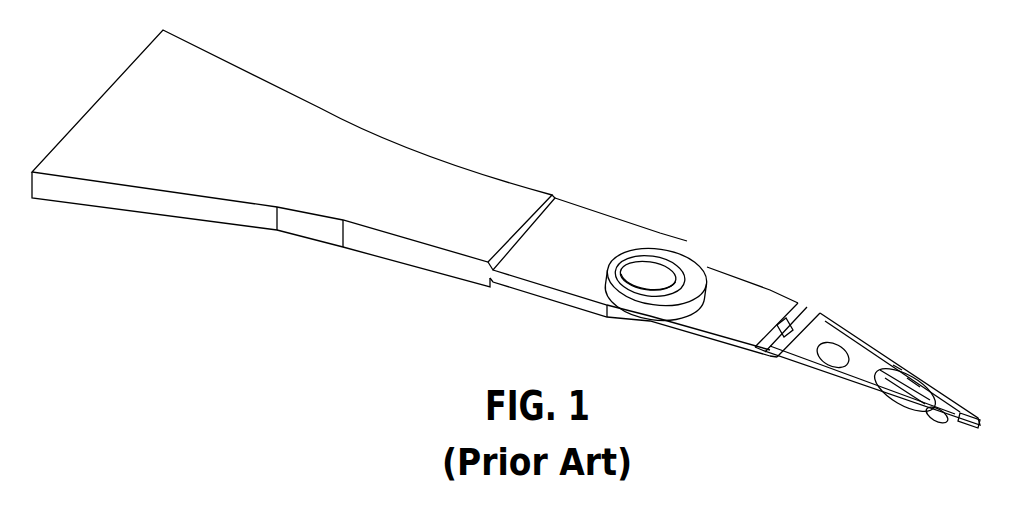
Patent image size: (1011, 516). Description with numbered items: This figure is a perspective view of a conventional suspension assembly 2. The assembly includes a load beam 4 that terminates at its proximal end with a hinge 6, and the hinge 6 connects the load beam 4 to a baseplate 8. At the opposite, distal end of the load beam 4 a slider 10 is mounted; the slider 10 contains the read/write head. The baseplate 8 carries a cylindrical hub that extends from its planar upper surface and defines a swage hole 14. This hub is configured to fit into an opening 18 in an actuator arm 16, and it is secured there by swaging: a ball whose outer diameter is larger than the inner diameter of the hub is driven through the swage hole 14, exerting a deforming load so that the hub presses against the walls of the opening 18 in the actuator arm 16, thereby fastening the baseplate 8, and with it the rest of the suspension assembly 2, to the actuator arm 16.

The suspension assembly 2 is at (795, 144).
The load beam 4 is at (873, 353).
The hinge 6 is at (807, 310).
The baseplate 8 is at (743, 287).
The slider 10 is at (937, 420).
The swage hole 14 is at (293, 271).
The actuator arm 16 is at (583, 230).
The opening 18 is at (665, 255).